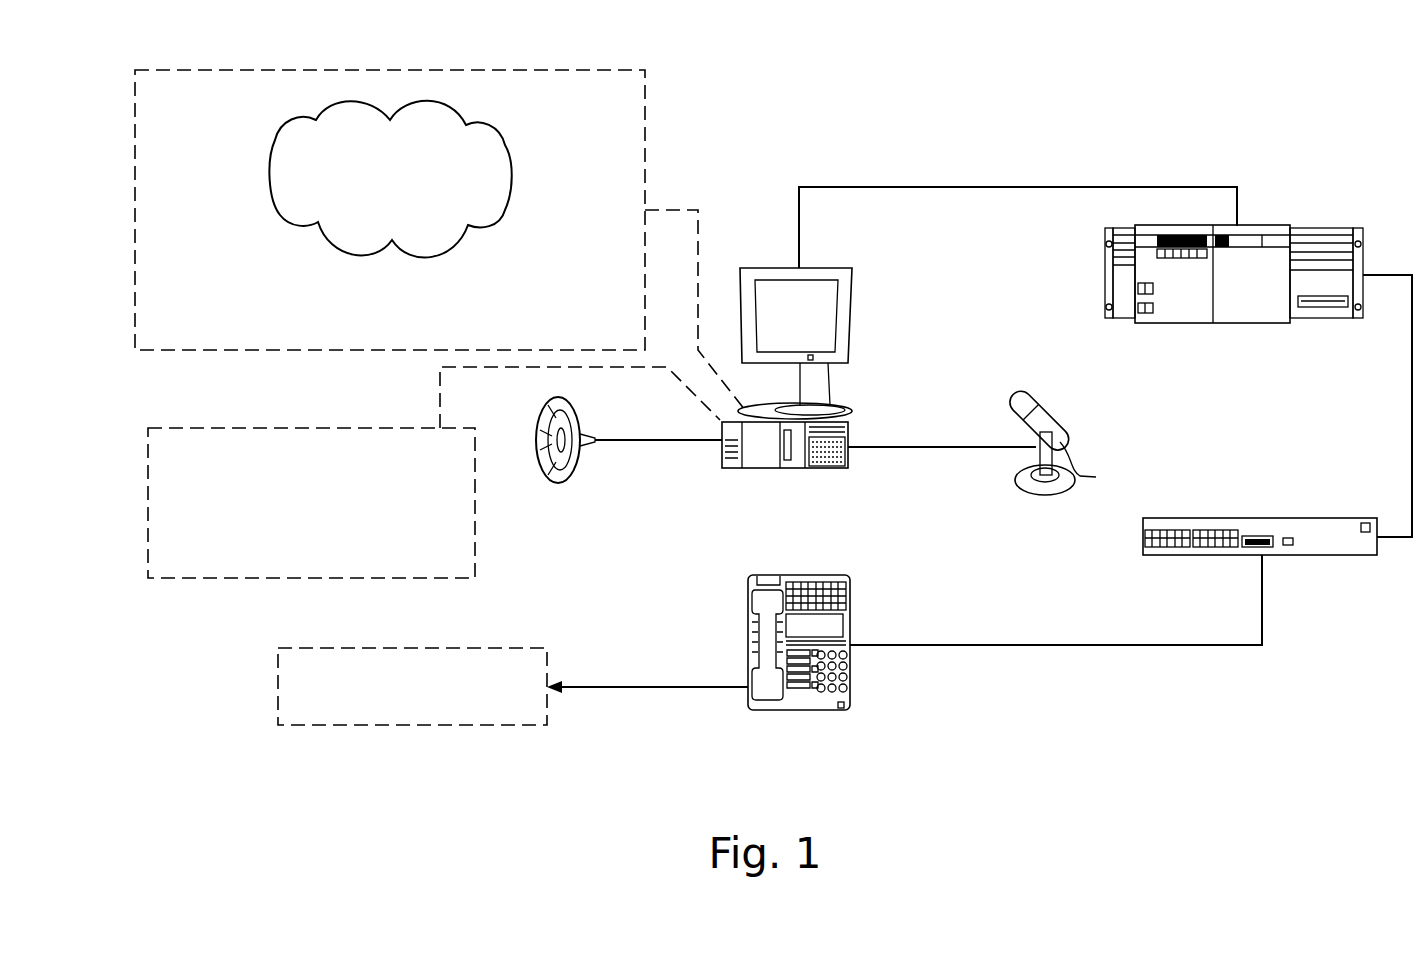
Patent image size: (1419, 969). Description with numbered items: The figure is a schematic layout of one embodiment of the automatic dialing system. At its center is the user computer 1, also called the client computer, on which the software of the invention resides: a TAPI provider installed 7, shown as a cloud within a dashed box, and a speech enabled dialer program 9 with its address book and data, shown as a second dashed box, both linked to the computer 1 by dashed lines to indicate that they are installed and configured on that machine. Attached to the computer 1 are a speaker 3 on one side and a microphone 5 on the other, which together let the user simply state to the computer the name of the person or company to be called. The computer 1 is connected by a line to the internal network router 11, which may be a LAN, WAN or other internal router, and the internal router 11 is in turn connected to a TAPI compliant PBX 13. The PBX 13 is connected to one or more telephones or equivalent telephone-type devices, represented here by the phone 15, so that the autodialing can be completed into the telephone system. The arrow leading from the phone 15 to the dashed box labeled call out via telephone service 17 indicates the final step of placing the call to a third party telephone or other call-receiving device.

The user computer 1 is at (855, 413).
The speaker 3 is at (578, 418).
The microphone 5 is at (1048, 410).
The TAPI provider installed 7 is at (645, 113).
The speech enabled dialer program 9 is at (240, 582).
The internal network router 11 is at (1265, 228).
The PBX 13 is at (1305, 518).
The phone 15 is at (852, 600).
The call out via telephone service 17 is at (375, 728).